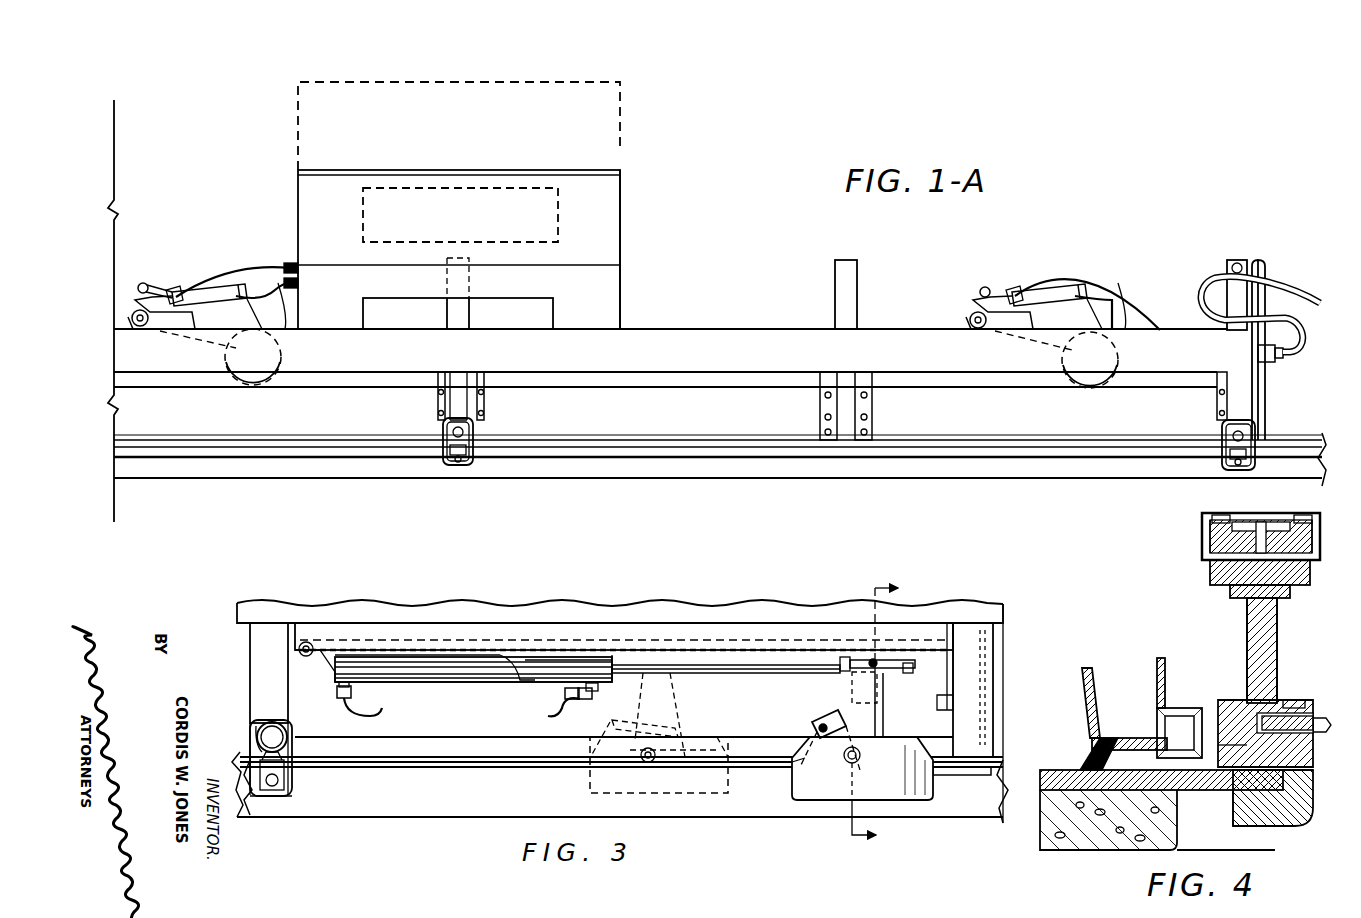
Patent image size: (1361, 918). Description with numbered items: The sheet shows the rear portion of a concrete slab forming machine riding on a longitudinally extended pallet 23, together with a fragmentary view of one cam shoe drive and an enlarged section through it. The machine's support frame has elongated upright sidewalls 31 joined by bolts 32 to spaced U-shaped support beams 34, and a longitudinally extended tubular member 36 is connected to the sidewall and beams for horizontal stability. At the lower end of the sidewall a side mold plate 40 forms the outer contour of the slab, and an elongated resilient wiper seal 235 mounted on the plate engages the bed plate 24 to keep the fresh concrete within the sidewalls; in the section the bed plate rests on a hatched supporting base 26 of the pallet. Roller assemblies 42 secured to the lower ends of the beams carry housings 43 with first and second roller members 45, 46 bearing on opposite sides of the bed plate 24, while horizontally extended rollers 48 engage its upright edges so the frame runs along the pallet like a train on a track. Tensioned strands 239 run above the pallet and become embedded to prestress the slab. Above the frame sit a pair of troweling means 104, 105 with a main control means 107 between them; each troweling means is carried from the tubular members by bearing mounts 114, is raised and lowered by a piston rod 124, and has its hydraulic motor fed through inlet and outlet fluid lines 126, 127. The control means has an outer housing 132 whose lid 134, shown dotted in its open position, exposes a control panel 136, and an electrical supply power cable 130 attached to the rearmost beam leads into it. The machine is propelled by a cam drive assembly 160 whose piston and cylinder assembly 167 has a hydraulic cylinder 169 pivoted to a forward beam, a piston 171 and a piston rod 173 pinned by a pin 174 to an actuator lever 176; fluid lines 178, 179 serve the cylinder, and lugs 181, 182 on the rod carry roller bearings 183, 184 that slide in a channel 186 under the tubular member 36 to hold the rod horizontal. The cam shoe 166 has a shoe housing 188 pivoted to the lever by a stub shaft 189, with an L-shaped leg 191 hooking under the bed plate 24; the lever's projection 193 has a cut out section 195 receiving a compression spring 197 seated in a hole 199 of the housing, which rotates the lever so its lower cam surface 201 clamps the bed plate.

In FIG. 4, the pallet 23 is at (1062, 766).
In FIG. 3, the bed plate 24 is at (973, 770).
In FIG. 4, the bed plate 24 is at (1182, 790).
In FIG. 4, the concrete floor 26 is at (1065, 848).
In FIG. 1-A, the sidewall 31 is at (660, 425).
In FIG. 1-A, the bolts 32 is at (486, 408).
In FIG. 1-A, the support beam 34 is at (460, 312).
In FIG. 3, the support beam 34 is at (250, 658).
In FIG. 1-A, the tubular member 36 is at (392, 366).
In FIG. 3, the tubular member 36 is at (462, 608).
In FIG. 4, the side mold plate 40 is at (1085, 702).
In FIG. 1-A, the roller assembly 42 is at (443, 462).
In FIG. 3, the roller assembly 42 is at (248, 720).
In FIG. 3, the housing 43 is at (292, 782).
In FIG. 3, the first roller member 45 is at (287, 733).
In FIG. 3, the second roller member 46 is at (270, 795).
In FIG. 3, the horizontally extended rollers 48 is at (252, 748).
In FIG. 1-A, the troweling means 104 is at (192, 278).
In FIG. 1-A, the troweling means 105 is at (1042, 282).
In FIG. 1-A, the main control means 107 is at (628, 222).
In FIG. 1-A, the bearing mount 114 is at (140, 305).
In FIG. 1-A, the piston rod 124 is at (150, 284).
In FIG. 1-A, the inlet fluid line 126 is at (256, 266).
In FIG. 1-A, the outlet fluid line 127 is at (287, 300).
In FIG. 1-A, the electrical supply power cable 130 is at (1225, 276).
In FIG. 1-A, the outer housing 132 is at (612, 250).
In FIG. 1-A, the lid 134 is at (620, 150).
In FIG. 1-A, the control panel 136 is at (460, 196).
In FIG. 3, the cam drive assembly 160 is at (512, 615).
In FIG. 3, the cam shoe 166 is at (907, 683).
In FIG. 4, the cam shoe 166 is at (1242, 668).
In FIG. 3, the piston and cylinder assembly 167 is at (522, 695).
In FIG. 3, the hydraulic cylinder 169 is at (432, 668).
In FIG. 3, the piston 171 is at (555, 672).
In FIG. 3, the piston rod 173 is at (775, 662).
In FIG. 3, the pin 174 is at (883, 662).
In FIG. 4, the pin 174 is at (1232, 582).
In FIG. 3, the actuator lever 176 is at (878, 735).
In FIG. 4, the actuator lever 176 is at (1276, 645).
In FIG. 3, the hydraulic fluid line 178 is at (372, 710).
In FIG. 3, the hydraulic fluid line 179 is at (560, 720).
In FIG. 4, the lug 181 is at (1243, 596).
In FIG. 4, the lug 182 is at (1255, 612).
In FIG. 4, the roller bearing 183 is at (1232, 514).
In FIG. 4, the roller bearing 184 is at (1303, 514).
In FIG. 3, the channel 186 is at (312, 638).
In FIG. 4, the channel 186 is at (1204, 530).
In FIG. 3, the shoe housing 188 is at (918, 800).
In FIG. 4, the shoe housing 188 is at (1232, 722).
In FIG. 3, the stub shaft 189 is at (860, 752).
In FIG. 4, the stub shaft 189 is at (1313, 790).
In FIG. 4, the leg 191 is at (1290, 820).
In FIG. 3, the projection 193 is at (842, 728).
In FIG. 4, the projection 193 is at (1285, 700).
In FIG. 3, the cut out section 195 is at (822, 718).
In FIG. 3, the compression spring 197 is at (818, 730).
In FIG. 3, the hole 199 is at (800, 797).
In FIG. 4, the cam surface 201 is at (1235, 800).
In FIG. 4, the wiper seal 235 is at (1118, 738).
In FIG. 1-A, the strands 239 is at (1316, 433).